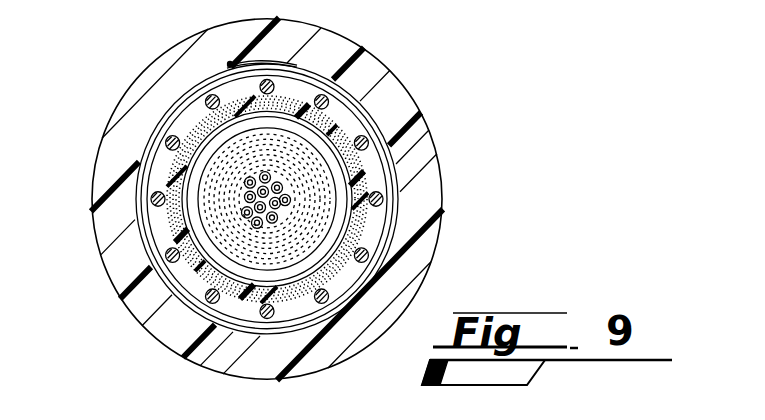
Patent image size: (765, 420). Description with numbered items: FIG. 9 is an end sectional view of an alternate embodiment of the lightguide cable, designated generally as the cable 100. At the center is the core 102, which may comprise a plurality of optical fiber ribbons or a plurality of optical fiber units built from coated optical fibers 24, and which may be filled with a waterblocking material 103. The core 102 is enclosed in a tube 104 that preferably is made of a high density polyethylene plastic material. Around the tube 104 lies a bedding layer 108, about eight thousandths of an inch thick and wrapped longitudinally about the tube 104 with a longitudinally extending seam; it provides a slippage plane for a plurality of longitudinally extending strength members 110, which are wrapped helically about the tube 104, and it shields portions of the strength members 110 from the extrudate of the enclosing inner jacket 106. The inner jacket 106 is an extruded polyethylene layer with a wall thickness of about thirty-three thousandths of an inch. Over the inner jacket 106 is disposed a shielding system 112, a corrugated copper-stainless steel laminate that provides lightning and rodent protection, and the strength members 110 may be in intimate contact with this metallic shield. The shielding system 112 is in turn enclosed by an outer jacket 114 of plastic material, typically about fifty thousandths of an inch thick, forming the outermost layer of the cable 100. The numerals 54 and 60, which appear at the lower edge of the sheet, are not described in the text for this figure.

The cable 100 is at (330, 192).
The core 102 is at (325, 190).
The waterblocking material 103 is at (203, 202).
The tube 104 is at (305, 115).
The inner jacket 106 is at (372, 152).
The bedding layer 108 is at (368, 222).
The strength members 110 is at (355, 258).
The shielding system 112 is at (357, 93).
The outer jacket 114 is at (180, 78).
The coated optical fibers 24 is at (152, 308).
The conductor 54 is at (265, 412).
The conductor 60 is at (390, 412).